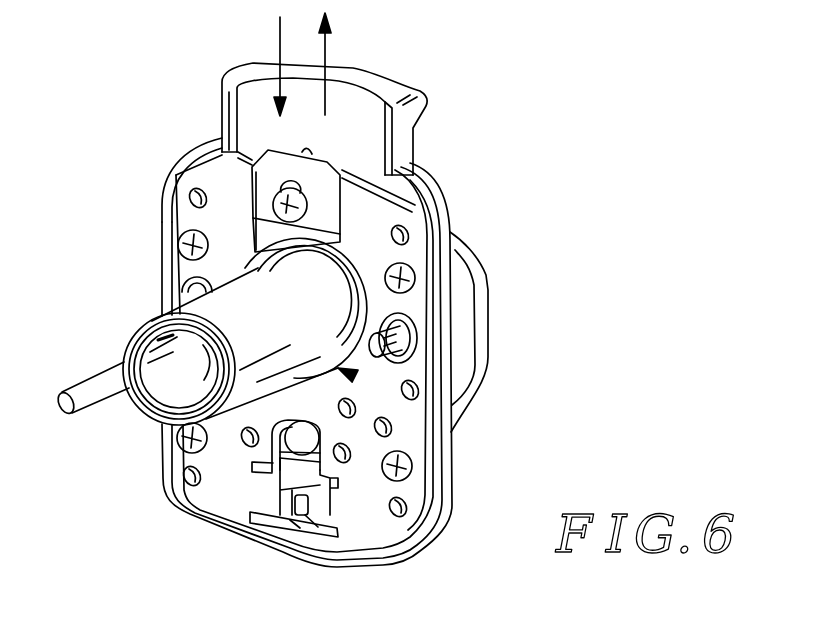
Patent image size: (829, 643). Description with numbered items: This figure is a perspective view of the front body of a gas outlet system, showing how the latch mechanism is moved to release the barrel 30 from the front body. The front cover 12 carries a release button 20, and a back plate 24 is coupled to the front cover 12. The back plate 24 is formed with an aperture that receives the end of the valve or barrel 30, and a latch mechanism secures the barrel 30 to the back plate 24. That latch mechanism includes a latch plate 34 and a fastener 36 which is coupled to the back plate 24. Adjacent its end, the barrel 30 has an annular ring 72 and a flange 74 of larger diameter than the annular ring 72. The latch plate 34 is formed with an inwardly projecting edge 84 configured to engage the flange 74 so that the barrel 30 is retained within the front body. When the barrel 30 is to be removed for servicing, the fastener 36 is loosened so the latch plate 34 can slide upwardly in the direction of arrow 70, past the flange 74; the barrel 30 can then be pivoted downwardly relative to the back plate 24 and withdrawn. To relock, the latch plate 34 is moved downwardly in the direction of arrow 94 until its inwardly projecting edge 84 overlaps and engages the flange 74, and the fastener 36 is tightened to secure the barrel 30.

The front cover 12 is at (498, 360).
The release button 20 is at (422, 78).
The back plate 24 is at (365, 518).
The barrel 30 is at (183, 380).
The latch plate 34 is at (248, 184).
The fastener 36 is at (315, 207).
The arrow 70 is at (327, 56).
The annular ring 72 is at (283, 257).
The flange 74 is at (318, 243).
The inwardly projecting edge 84 is at (320, 225).
The arrow 94 is at (278, 47).